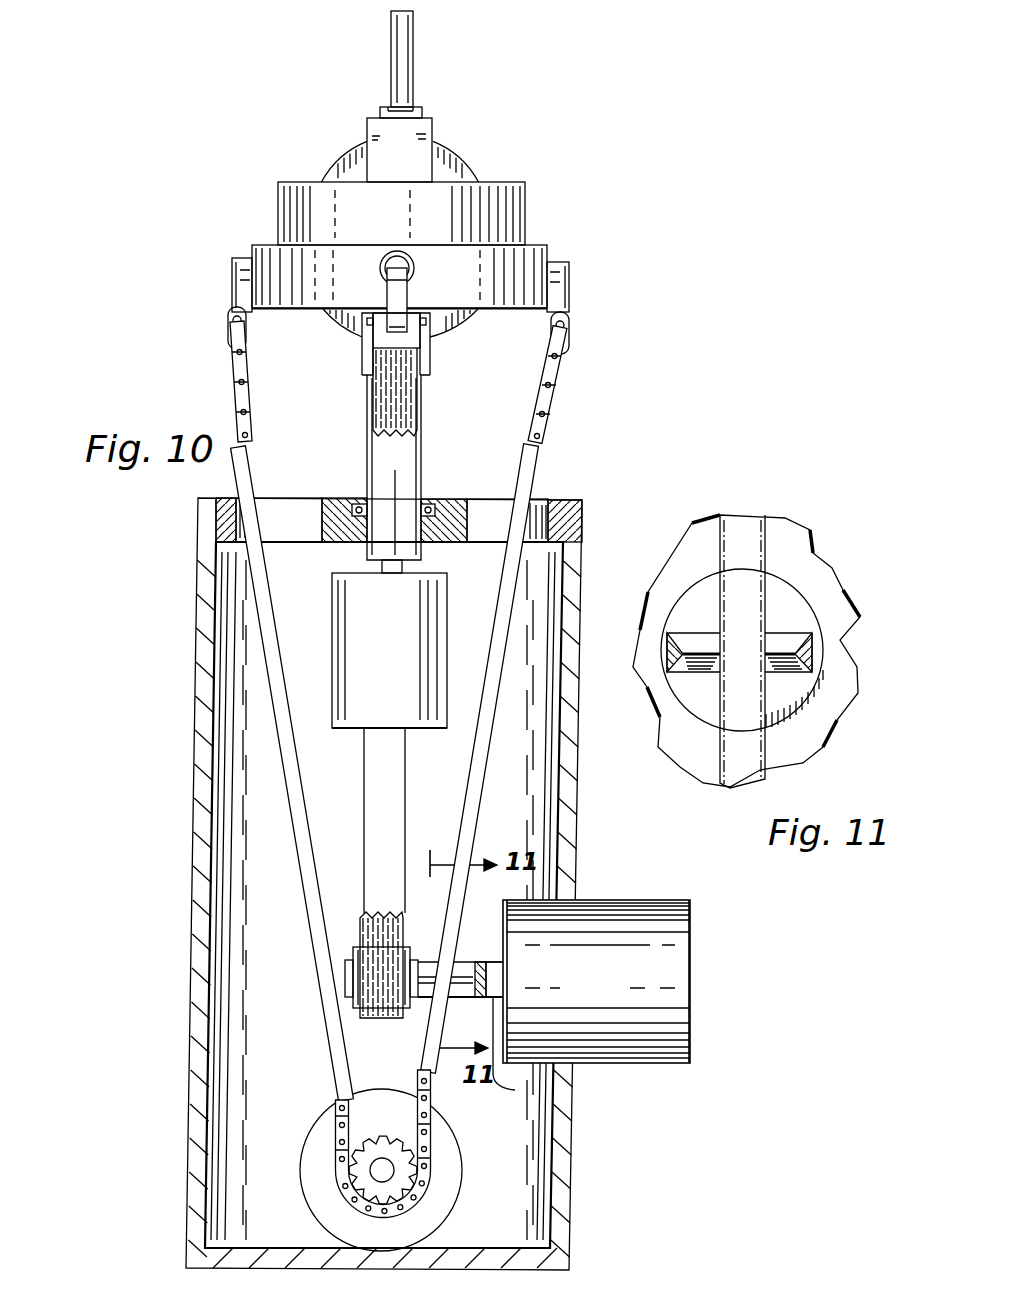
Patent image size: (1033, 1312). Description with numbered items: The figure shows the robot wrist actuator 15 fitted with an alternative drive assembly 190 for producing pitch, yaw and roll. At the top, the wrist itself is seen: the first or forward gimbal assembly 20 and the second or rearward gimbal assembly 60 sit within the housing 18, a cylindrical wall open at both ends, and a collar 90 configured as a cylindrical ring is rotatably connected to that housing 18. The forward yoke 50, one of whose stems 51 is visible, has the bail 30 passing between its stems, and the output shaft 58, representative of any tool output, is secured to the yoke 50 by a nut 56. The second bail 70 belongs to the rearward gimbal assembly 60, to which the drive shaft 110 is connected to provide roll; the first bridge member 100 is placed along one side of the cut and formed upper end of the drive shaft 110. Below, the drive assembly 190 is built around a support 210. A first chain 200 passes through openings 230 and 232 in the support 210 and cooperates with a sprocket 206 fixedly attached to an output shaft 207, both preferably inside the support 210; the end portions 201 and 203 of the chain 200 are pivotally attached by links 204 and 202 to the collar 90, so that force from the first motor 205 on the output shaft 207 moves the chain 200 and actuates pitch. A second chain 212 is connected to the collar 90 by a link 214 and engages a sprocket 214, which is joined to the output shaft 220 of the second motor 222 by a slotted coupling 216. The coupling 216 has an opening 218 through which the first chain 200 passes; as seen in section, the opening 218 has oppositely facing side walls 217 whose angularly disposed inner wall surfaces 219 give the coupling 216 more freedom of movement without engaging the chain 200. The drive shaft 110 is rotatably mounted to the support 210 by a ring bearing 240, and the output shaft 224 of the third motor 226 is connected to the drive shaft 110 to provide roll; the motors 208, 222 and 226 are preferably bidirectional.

In FIG. 10, the robot wrist actuator 15 is at (452, 160).
In FIG. 10, the housing 18 is at (378, 226).
In FIG. 10, the first or forward gimbal assembly 20 is at (462, 172).
In FIG. 10, the bail 30 is at (438, 148).
In FIG. 10, the first or forward yoke 50 is at (377, 96).
In FIG. 10, the stem 51 is at (410, 161).
In FIG. 10, the nut 56 is at (383, 108).
In FIG. 10, the output shaft 58 is at (414, 32).
In FIG. 10, the second or rearward gimbal assembly 60 is at (450, 326).
In FIG. 10, the second bail 70 is at (355, 330).
In FIG. 10, the collar 90 is at (326, 293).
In FIG. 10, the first bridge member 100 is at (426, 366).
In FIG. 10, the drive shaft 110 is at (405, 455).
In FIG. 10, the drive assembly 190 is at (168, 635).
In FIG. 10, the first chain 200 is at (546, 406).
In FIG. 11, the first chain 200 is at (740, 522).
In FIG. 10, the end portion 201 is at (232, 320).
In FIG. 10, the link 202 is at (565, 282).
In FIG. 10, the end portion 203 is at (562, 335).
In FIG. 10, the link 204 is at (235, 268).
In FIG. 10, the first motor 205 is at (452, 1195).
In FIG. 10, the sprocket 206 is at (395, 1135).
In FIG. 10, the output shaft 207 is at (394, 1168).
In FIG. 10, the motor 208 is at (318, 1163).
In FIG. 10, the support 210 is at (198, 752).
In FIG. 10, the second chain 212 is at (385, 398).
In FIG. 10, the link / sprocket 214 is at (407, 282).
In FIG. 10, the slotted coupling 216 is at (478, 1000).
In FIG. 11, the slotted coupling 216 is at (701, 688).
In FIG. 11, the side walls 217 is at (670, 652).
In FIG. 10, the opening 218 is at (477, 965).
In FIG. 11, the opening 218 is at (701, 633).
In FIG. 11, the inner wall surfaces 219 is at (672, 612).
In FIG. 10, the output shaft 220 is at (525, 1049).
In FIG. 10, the second motor 222 is at (613, 994).
In FIG. 11, the second motor 222 is at (775, 592).
In FIG. 10, the output shaft 224 is at (392, 574).
In FIG. 10, the third motor 226 is at (403, 676).
In FIG. 10, the opening 230 is at (292, 520).
In FIG. 10, the opening 232 is at (482, 520).
In FIG. 10, the ring bearing 240 is at (352, 505).